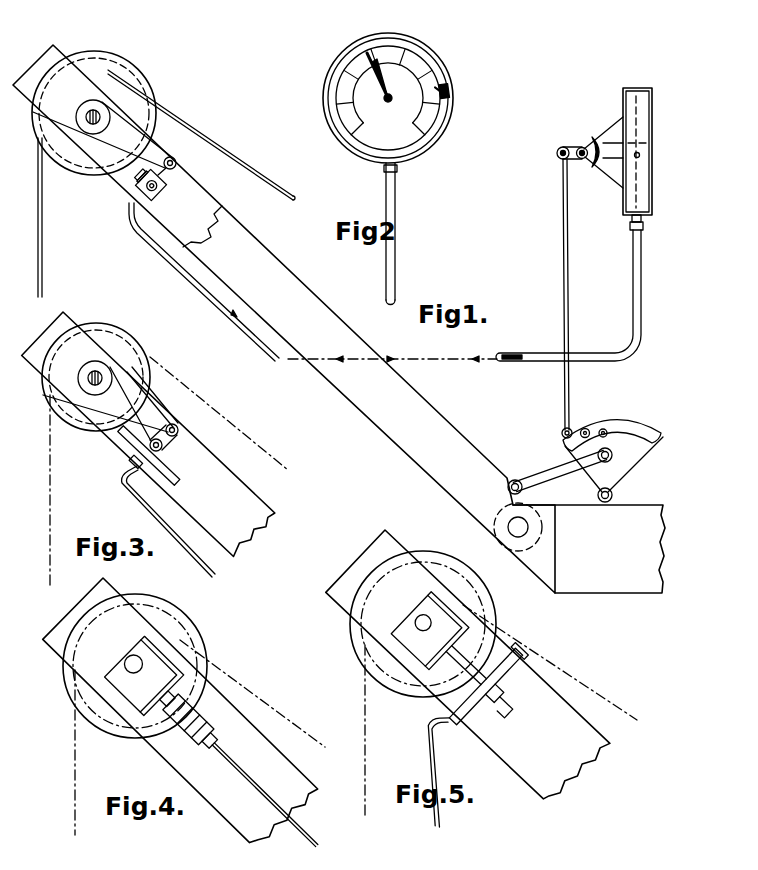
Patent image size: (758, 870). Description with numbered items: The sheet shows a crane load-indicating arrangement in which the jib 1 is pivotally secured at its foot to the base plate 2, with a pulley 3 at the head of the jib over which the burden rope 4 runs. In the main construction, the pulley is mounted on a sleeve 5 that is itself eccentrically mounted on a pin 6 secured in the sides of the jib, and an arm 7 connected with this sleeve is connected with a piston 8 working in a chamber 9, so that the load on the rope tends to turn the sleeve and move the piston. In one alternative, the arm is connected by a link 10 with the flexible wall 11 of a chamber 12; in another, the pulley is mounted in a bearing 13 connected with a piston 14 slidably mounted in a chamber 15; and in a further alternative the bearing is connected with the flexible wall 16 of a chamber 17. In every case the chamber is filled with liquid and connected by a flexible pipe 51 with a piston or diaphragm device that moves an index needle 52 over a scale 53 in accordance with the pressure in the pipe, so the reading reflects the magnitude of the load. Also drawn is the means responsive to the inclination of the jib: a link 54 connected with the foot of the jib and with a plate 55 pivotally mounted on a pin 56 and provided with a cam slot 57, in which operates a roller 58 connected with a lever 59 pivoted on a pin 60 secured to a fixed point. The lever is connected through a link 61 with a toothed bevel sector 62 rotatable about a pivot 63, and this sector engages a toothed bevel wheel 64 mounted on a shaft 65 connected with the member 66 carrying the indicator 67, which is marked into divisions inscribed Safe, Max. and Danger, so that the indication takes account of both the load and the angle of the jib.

In FIG. 1, the jib 1 is at (277, 290).
In FIG. 3, the jib 1 is at (149, 435).
In FIG. 4, the jib 1 is at (227, 800).
In FIG. 5, the jib 1 is at (568, 737).
In FIG. 1, the base plate 2 is at (638, 520).
In FIG. 1, the pulley 3 is at (110, 77).
In FIG. 3, the pulley 3 is at (108, 347).
In FIG. 4, the pulley 3 is at (110, 715).
In FIG. 5, the pulley 3 is at (408, 582).
In FIG. 1, the burden rope 4 is at (175, 97).
In FIG. 3, the burden rope 4 is at (172, 382).
In FIG. 4, the burden rope 4 is at (240, 672).
In FIG. 5, the burden rope 4 is at (533, 637).
In FIG. 1, the sleeve 5 is at (92, 101).
In FIG. 3, the sleeve 5 is at (98, 364).
In FIG. 1, the pin 6 is at (86, 113).
In FIG. 3, the pin 6 is at (88, 376).
In FIG. 1, the arm 7 is at (127, 130).
In FIG. 3, the arm 7 is at (127, 390).
In FIG. 1, the piston 8 is at (128, 187).
In FIG. 1, the chamber 9 is at (138, 197).
In FIG. 3, the link 10 is at (178, 438).
In FIG. 3, the flexible wall 11 is at (163, 457).
In FIG. 3, the chamber 12 is at (173, 482).
In FIG. 4, the bearing 13 is at (158, 675).
In FIG. 5, the bearing 13 is at (400, 627).
In FIG. 4, the piston 14 is at (183, 727).
In FIG. 4, the chamber 15 is at (202, 740).
In FIG. 5, the flexible wall 16 is at (508, 660).
In FIG. 5, the chamber 17 is at (523, 667).
In FIG. 1, the flexible pipe 51 is at (635, 293).
In FIG. 2, the index needle 52 is at (366, 80).
In FIG. 2, the scale 53 is at (345, 118).
In FIG. 1, the link 54 is at (542, 477).
In FIG. 1, the plate 55 is at (630, 461).
In FIG. 1, the pin 56 is at (601, 499).
In FIG. 1, the cam slot 57 is at (638, 435).
In FIG. 1, the roller 58 is at (605, 430).
In FIG. 1, the lever 59 is at (569, 428).
In FIG. 1, the pin 60 is at (587, 429).
In FIG. 1, the link 61 is at (562, 262).
In FIG. 1, the toothed bevel sector 62 is at (597, 163).
In FIG. 1, the pivot 63 is at (558, 158).
In FIG. 1, the toothed bevel wheel 64 is at (580, 147).
In FIG. 1, the shaft 65 is at (612, 147).
In FIG. 1, the member 66 is at (640, 135).
In FIG. 2, the indicator 67 is at (435, 70).